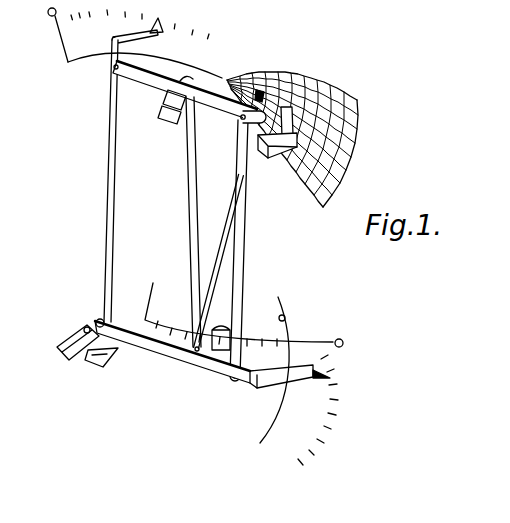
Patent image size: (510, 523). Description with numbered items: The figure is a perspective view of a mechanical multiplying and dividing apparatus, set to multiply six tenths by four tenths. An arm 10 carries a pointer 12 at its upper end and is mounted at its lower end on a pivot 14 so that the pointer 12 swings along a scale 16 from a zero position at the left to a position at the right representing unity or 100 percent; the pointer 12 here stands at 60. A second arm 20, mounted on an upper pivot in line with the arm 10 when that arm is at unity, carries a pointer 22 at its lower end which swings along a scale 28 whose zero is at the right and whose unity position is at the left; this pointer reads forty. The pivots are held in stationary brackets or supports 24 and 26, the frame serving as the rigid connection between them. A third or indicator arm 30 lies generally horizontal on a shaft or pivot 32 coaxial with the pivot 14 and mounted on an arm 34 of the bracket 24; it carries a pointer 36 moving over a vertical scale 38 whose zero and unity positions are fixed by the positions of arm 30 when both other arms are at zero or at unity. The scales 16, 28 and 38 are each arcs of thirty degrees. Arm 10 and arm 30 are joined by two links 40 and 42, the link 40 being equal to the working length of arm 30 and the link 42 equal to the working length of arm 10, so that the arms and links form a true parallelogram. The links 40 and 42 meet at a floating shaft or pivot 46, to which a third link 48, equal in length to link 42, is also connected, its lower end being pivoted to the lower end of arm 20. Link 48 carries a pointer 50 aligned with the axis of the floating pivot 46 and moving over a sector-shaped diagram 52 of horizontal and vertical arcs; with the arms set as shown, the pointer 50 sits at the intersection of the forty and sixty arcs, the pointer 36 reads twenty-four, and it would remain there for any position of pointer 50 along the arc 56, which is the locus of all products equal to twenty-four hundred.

The arm 10 is at (110, 154).
The pointer 12 is at (161, 19).
The pivot or shaft 14 is at (100, 320).
The scale 16 is at (76, 23).
The second arm 20 is at (189, 168).
The pointer 22 is at (233, 331).
The bracket or support 24 is at (93, 357).
The bracket or support 26 is at (165, 98).
The scale 28 is at (268, 340).
The indicator arm 30 is at (161, 352).
The shaft or pivot 32 is at (82, 330).
The arm 34 is at (68, 340).
The pointer 36 is at (323, 375).
The vertical scale 38 is at (322, 409).
The link 40 is at (153, 80).
The link 42 is at (240, 237).
The floating shaft or pivot 46 is at (239, 116).
The third link 48 is at (226, 220).
The pointer 50 is at (296, 108).
The sector-shaped diagram 52 is at (360, 101).
The arc 56 is at (352, 124).
The scale tick marks 60 is at (158, 18).
The angle scale 100 is at (213, 80).